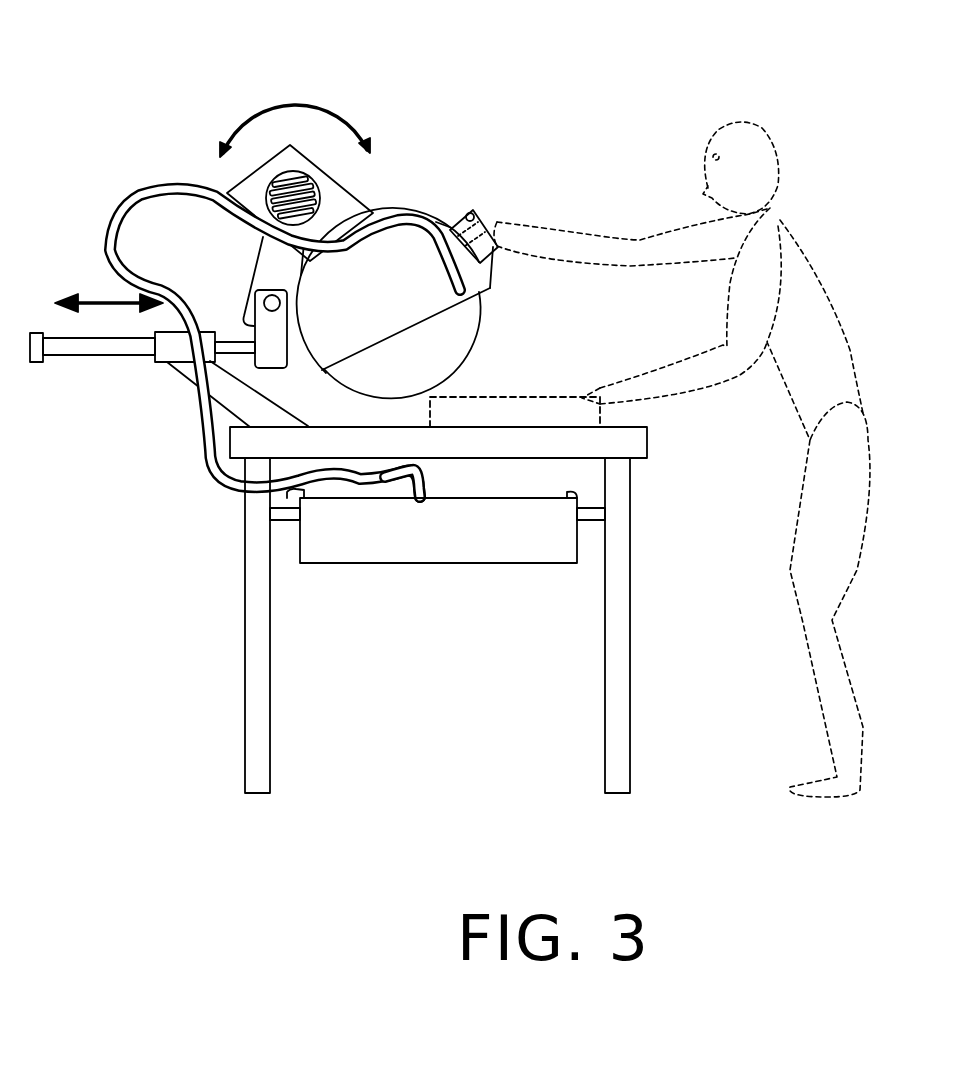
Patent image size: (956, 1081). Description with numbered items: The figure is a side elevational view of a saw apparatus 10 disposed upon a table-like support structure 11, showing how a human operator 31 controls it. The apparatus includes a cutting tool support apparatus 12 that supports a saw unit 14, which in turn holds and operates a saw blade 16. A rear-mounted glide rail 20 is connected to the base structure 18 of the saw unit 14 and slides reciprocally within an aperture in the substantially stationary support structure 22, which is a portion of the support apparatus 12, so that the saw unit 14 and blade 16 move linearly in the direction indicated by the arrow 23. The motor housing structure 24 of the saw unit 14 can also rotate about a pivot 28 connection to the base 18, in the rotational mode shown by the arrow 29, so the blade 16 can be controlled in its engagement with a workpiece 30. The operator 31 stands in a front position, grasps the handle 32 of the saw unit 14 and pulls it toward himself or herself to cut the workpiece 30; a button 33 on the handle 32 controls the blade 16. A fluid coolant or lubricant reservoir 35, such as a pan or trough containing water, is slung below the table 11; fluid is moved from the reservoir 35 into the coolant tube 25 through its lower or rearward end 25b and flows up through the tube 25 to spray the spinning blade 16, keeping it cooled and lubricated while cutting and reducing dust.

The saw apparatus 10 is at (130, 36).
The table-like support structure 11 is at (622, 492).
The cutting tool support apparatus 12 is at (162, 392).
The saw unit 14 is at (446, 124).
The saw blade 16 is at (444, 346).
The base structure 18 is at (262, 330).
The glide rail 20 is at (110, 345).
The support structure 22 is at (270, 413).
The arrow 23 is at (108, 300).
The motor housing structure 24 is at (268, 258).
The coolant tube 25 is at (178, 184).
The rearward end of the tube 25b is at (430, 492).
The pivot 28 is at (270, 297).
The arrow 29 is at (335, 108).
The workpiece 30 is at (540, 398).
The human operator 31 is at (818, 230).
The handle 32 is at (480, 213).
The button 33 is at (468, 213).
The reservoir 35 is at (503, 553).